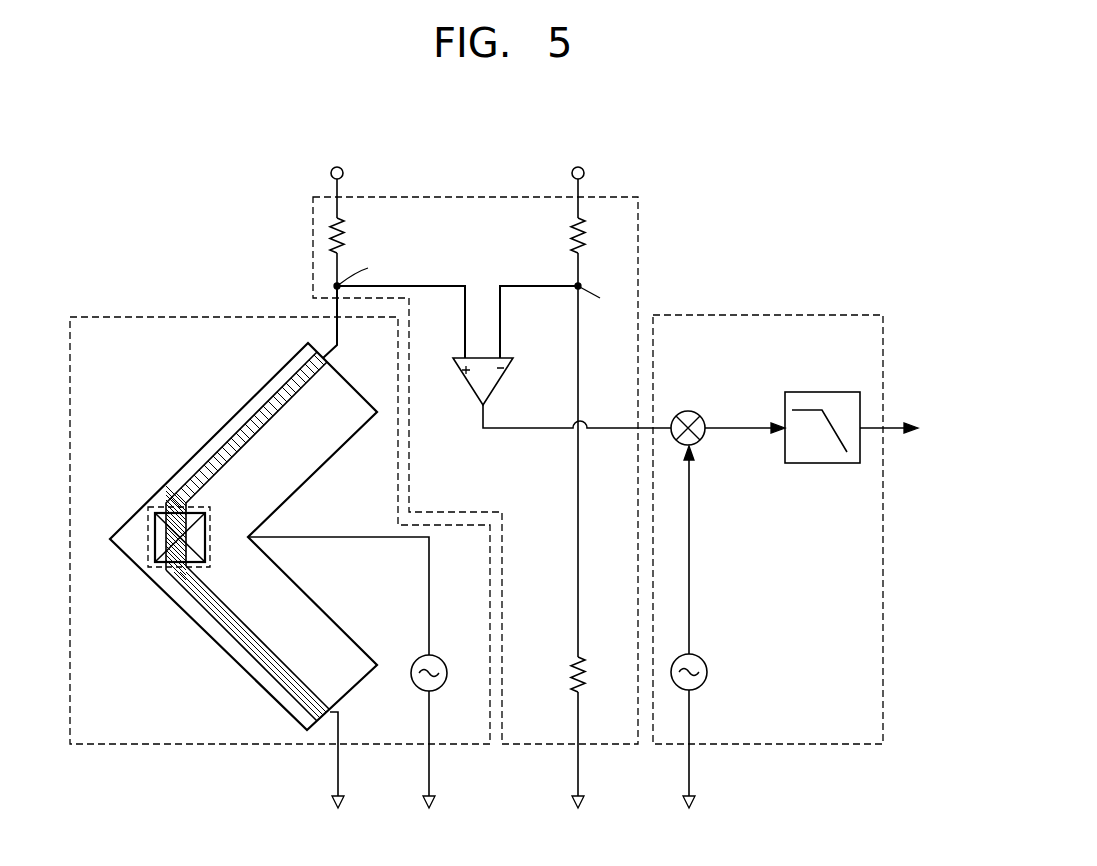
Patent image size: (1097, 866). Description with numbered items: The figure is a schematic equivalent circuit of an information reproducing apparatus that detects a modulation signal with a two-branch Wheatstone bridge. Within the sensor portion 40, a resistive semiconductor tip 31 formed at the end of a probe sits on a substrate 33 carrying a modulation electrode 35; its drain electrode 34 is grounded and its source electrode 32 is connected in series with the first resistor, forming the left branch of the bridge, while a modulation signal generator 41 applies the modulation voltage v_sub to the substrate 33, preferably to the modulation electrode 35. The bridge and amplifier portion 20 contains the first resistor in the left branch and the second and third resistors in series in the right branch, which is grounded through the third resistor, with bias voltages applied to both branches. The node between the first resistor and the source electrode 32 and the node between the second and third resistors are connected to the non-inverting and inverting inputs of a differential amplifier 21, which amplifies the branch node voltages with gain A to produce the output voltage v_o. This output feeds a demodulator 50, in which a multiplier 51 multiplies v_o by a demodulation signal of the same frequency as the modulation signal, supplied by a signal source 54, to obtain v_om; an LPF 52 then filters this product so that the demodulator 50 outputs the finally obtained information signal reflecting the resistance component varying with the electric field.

The signal detection / amplifier unit 20 is at (460, 197).
The differential amplifier 21 is at (495, 382).
The resistive semiconductor tip 31 is at (153, 527).
The source electrode 32 is at (265, 400).
The substrate 33 is at (252, 536).
The modulation electrode 35 is at (332, 637).
The drain electrode 34 is at (222, 615).
The sensor unit 40 is at (143, 317).
The modulation signal generator 41 is at (442, 658).
The demodulator 50 is at (794, 313).
The multiplier 51 is at (703, 417).
The LPF 52 is at (842, 392).
The reference voltage source Vsub 54 is at (707, 672).